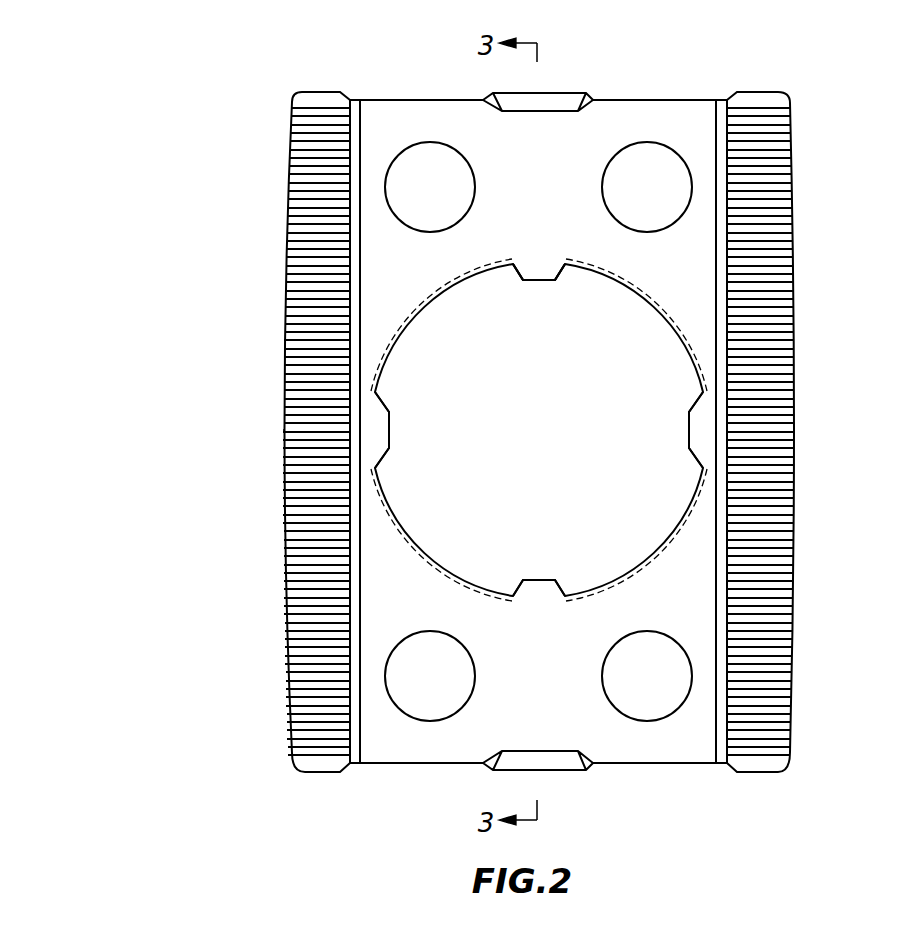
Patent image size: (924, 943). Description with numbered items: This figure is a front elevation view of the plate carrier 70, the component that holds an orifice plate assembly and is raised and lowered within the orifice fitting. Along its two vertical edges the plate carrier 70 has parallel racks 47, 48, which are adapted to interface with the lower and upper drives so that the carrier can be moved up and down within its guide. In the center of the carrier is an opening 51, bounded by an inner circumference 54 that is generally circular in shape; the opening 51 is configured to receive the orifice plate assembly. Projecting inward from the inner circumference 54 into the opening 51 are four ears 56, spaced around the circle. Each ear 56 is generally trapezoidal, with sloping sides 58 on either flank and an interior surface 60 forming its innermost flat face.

The rack 47 is at (794, 160).
The rack 48 is at (300, 236).
The opening 51 is at (633, 318).
The inner circumference 54 is at (408, 322).
The ear 56 is at (535, 283).
The sloping side 58 is at (517, 276).
The interior surface 60 is at (550, 286).
The plate carrier 70 is at (226, 594).